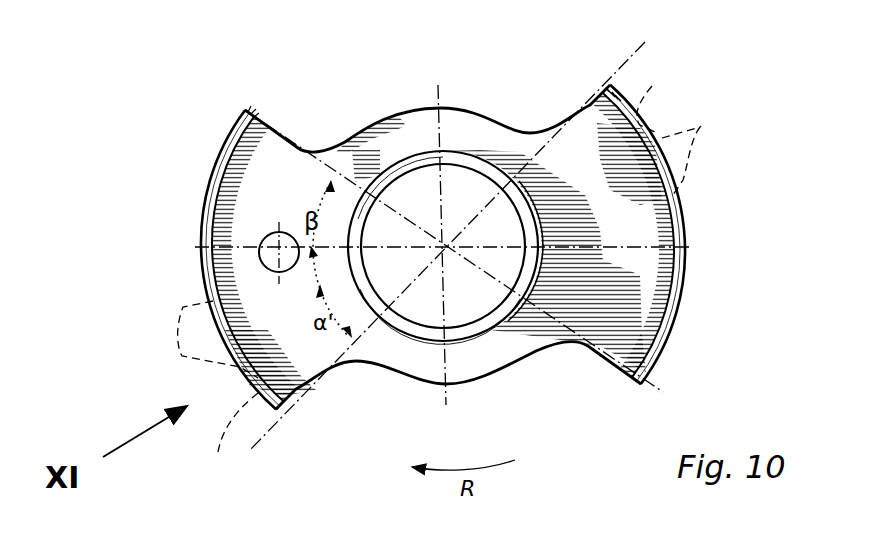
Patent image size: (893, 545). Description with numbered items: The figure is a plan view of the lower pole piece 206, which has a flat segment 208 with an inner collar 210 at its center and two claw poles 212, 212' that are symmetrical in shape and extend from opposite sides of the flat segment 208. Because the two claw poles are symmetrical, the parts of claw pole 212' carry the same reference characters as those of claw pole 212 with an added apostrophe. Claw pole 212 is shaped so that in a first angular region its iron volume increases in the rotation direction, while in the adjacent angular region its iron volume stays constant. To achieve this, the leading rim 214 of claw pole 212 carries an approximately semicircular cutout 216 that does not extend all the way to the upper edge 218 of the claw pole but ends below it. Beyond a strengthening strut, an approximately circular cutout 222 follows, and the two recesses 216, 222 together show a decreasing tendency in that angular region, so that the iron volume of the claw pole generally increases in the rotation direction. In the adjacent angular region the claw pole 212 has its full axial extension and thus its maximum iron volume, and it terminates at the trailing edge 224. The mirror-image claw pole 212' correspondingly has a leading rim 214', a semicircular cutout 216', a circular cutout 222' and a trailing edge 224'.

The lower pole piece 206 is at (712, 218).
The flat segment 208 is at (527, 130).
The inner collar 210 is at (477, 168).
The claw pole 212 is at (218, 260).
The claw pole 212' is at (690, 234).
The leading rim 214 is at (311, 432).
The leading rim 214' is at (620, 60).
The semicircular cutout 216 is at (231, 440).
The semicircular cutout 216' is at (671, 96).
The upper edge 218 is at (203, 268).
The circular cutout 222 is at (201, 345).
The circular cutout 222' is at (706, 158).
The trailing edge 224 is at (278, 105).
The trailing edge 224' is at (639, 407).